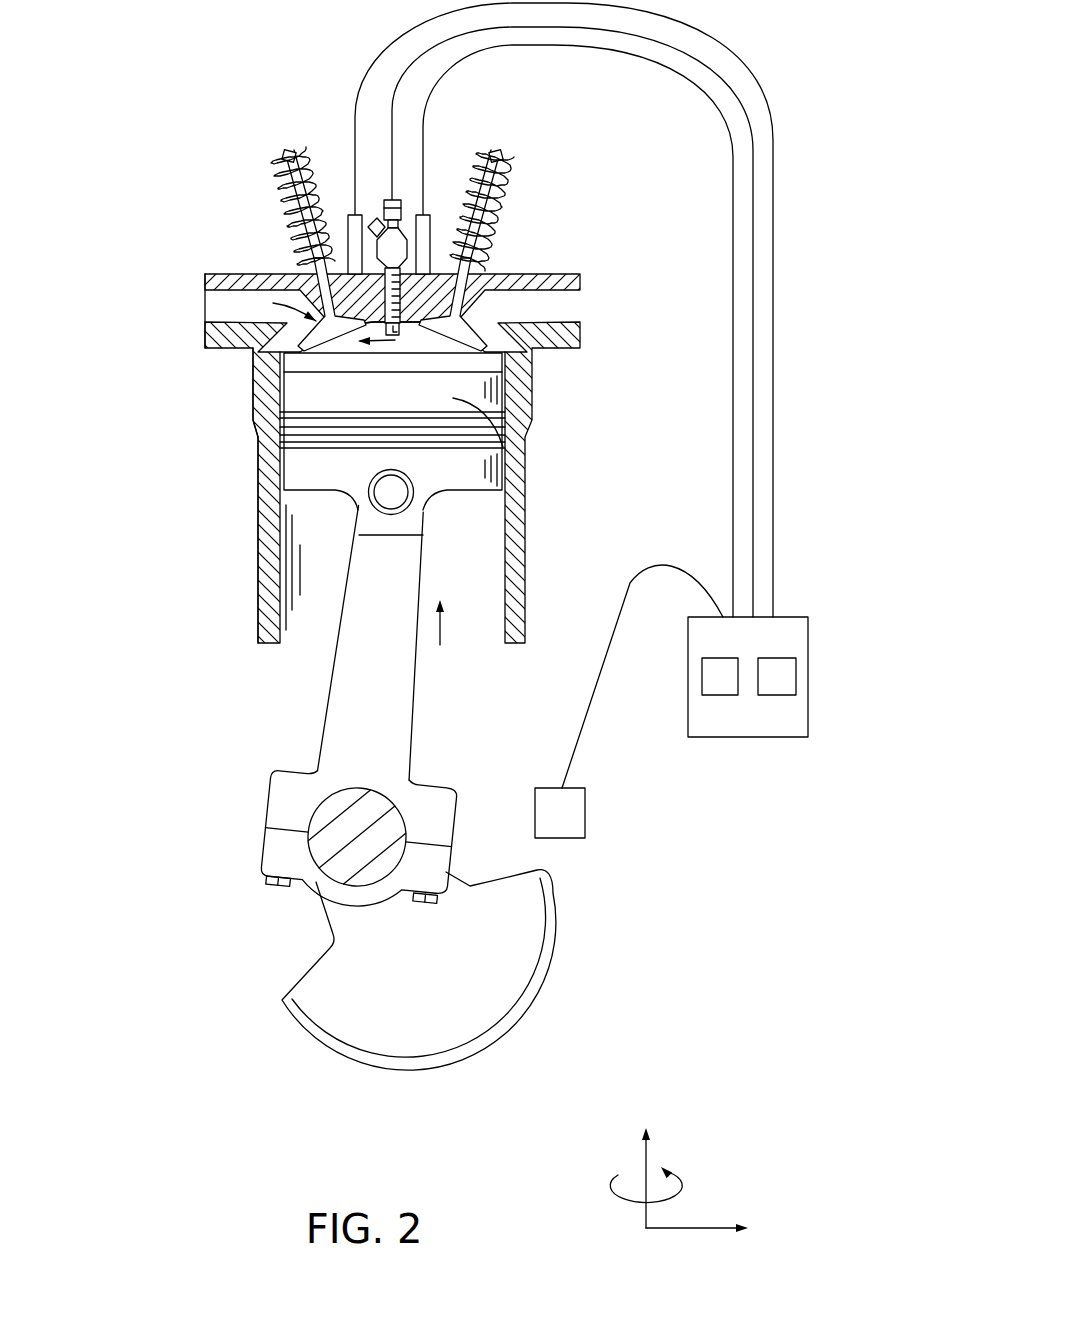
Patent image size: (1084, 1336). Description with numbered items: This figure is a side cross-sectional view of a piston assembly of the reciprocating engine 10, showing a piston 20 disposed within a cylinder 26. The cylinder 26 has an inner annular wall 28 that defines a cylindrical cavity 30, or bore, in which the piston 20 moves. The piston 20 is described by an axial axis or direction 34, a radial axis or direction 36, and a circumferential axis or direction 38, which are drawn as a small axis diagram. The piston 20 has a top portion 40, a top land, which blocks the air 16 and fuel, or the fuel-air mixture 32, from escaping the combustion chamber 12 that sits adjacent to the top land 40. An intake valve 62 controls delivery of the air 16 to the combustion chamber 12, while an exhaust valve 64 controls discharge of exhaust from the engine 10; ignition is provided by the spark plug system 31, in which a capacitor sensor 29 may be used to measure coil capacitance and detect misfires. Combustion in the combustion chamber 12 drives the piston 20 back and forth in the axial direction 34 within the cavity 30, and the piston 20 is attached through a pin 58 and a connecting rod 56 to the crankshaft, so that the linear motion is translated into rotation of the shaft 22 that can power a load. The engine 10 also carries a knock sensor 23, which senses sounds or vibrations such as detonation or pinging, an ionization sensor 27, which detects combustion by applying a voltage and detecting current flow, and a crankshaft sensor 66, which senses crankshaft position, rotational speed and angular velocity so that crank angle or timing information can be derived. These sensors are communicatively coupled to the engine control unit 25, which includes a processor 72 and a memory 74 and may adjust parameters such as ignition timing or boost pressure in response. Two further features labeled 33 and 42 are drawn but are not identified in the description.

The engine 10 is at (622, 178).
The combustion chamber 12 is at (470, 336).
The air 16 is at (290, 274).
The piston 20 is at (528, 522).
The shaft 22 is at (323, 982).
The knock sensor 23 is at (432, 225).
The engine control unit 25 is at (787, 617).
The cylinder 26 is at (258, 525).
The ionization sensor 27 is at (347, 232).
The inner annular wall 28 is at (290, 572).
The capacitor sensor 29 is at (400, 330).
The cylindrical cavity 30 is at (305, 635).
The spark plug system 31 is at (385, 195).
The fuel-air mixture 32 is at (292, 332).
The piston travel direction 33 is at (440, 645).
The axial axis 34 is at (645, 1160).
The radial axis 36 is at (690, 1228).
The circumferential axis 38 is at (680, 1197).
The top portion 40 is at (505, 476).
The cylinder liner 42 is at (280, 402).
The connecting rod 56 is at (395, 750).
The pin 58 is at (397, 501).
The intake valve 62 is at (287, 158).
The exhaust valve 64 is at (497, 160).
The crankshaft sensor 66 is at (585, 815).
The processor 72 is at (722, 695).
The memory 74 is at (778, 695).